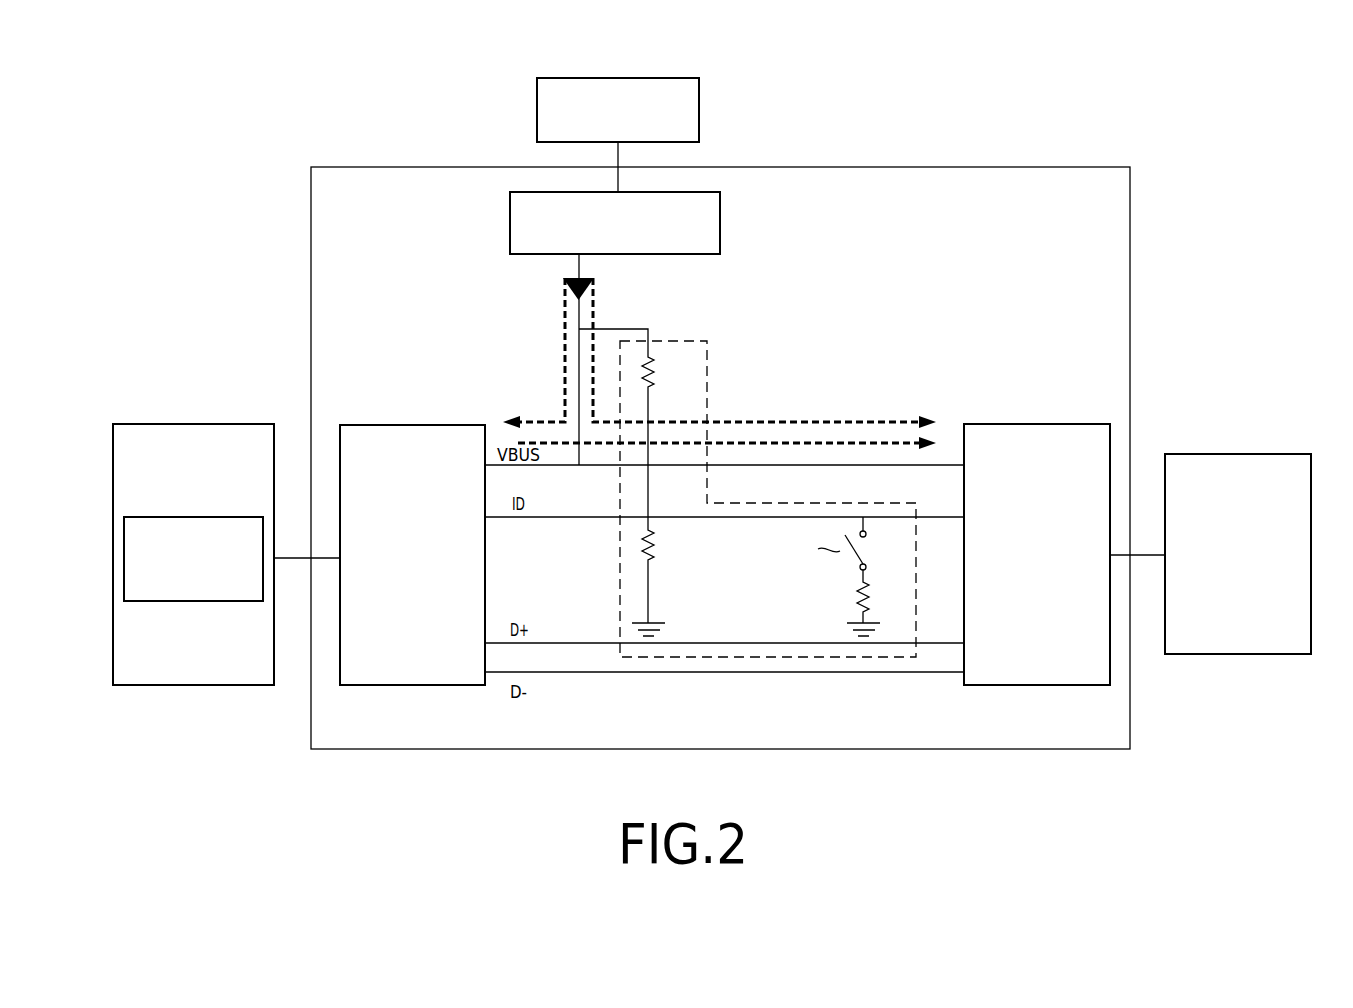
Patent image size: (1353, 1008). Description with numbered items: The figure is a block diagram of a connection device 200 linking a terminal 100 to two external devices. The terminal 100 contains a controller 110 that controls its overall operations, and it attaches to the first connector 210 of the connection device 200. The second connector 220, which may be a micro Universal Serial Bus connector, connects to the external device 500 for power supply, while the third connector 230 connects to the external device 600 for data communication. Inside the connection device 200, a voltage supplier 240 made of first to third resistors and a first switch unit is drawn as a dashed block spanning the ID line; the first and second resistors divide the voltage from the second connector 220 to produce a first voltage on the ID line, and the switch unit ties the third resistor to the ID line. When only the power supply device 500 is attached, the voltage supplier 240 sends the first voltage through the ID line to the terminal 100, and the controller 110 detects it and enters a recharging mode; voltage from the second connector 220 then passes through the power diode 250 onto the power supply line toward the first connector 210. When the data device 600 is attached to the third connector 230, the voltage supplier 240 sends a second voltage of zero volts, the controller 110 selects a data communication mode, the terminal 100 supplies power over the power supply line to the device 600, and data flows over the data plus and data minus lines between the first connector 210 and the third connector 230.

The terminal 100 is at (196, 685).
The controller 110 is at (193, 517).
The connection device 200 is at (950, 167).
The first connector 210 is at (412, 425).
The second connector 220 is at (722, 222).
The third connector 230 is at (1037, 424).
The voltage supplier 240 is at (770, 657).
The power diode 250 is at (563, 297).
The external device for power supply 500 is at (700, 108).
The external device for data communication 600 is at (1238, 454).